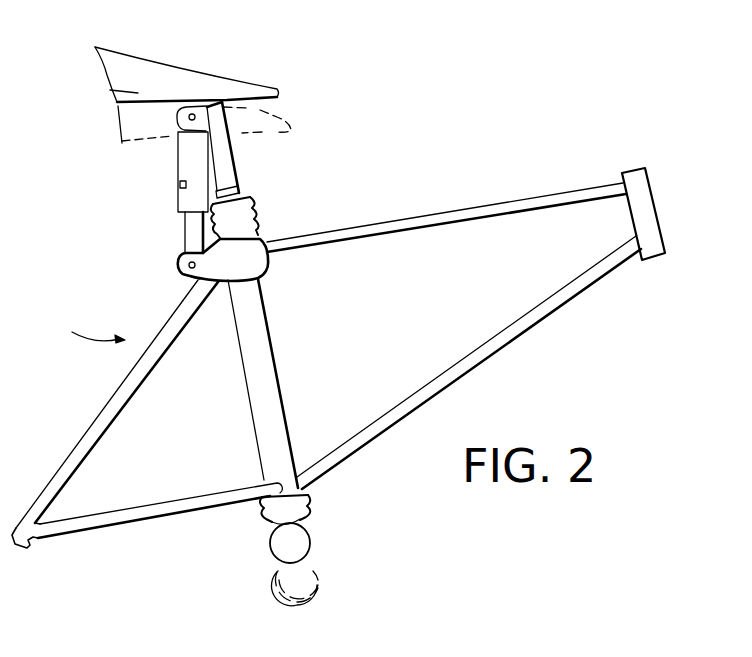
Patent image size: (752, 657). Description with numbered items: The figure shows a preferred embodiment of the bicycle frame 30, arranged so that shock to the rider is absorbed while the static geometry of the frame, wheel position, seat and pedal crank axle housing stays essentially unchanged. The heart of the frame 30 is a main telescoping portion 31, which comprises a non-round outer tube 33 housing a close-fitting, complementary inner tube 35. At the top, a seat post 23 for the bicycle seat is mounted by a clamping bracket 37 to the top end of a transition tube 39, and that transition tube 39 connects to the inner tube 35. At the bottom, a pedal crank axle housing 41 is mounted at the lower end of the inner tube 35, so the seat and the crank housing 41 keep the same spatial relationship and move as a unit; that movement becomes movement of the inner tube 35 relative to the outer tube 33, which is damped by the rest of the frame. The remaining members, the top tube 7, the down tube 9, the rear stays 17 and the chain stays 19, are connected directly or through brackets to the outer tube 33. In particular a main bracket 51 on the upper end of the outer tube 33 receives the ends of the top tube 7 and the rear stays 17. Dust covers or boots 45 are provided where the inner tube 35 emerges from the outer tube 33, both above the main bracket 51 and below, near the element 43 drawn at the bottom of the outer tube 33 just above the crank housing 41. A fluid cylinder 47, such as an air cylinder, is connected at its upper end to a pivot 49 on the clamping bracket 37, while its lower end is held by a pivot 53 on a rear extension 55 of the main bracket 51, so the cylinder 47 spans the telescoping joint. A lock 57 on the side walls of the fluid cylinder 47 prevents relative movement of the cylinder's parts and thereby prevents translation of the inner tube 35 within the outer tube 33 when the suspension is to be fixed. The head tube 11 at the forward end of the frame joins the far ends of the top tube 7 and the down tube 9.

The top tube 7 is at (560, 206).
The down tube 9 is at (480, 343).
The head tube 11 is at (656, 216).
The rear stays 17 is at (96, 445).
The chain stays 19 is at (200, 497).
The seat post 23 is at (223, 102).
The bicycle frame 30 is at (86, 325).
The main telescoping portion 31 is at (237, 390).
The outer tube 33 is at (278, 387).
The inner tube 35 is at (240, 192).
The clamping bracket 37 is at (172, 102).
The transition tube 39 is at (233, 158).
The pedal crank axle housing 41 is at (271, 553).
The bottom bracket shell 43 is at (270, 525).
The dust covers or boots 45 is at (258, 220).
The fluid cylinder 47 is at (178, 147).
The pivot 49 is at (177, 122).
The main bracket 51 is at (268, 270).
The pivot 53 is at (189, 265).
The rear extension 55 is at (187, 277).
The lock 57 is at (178, 186).